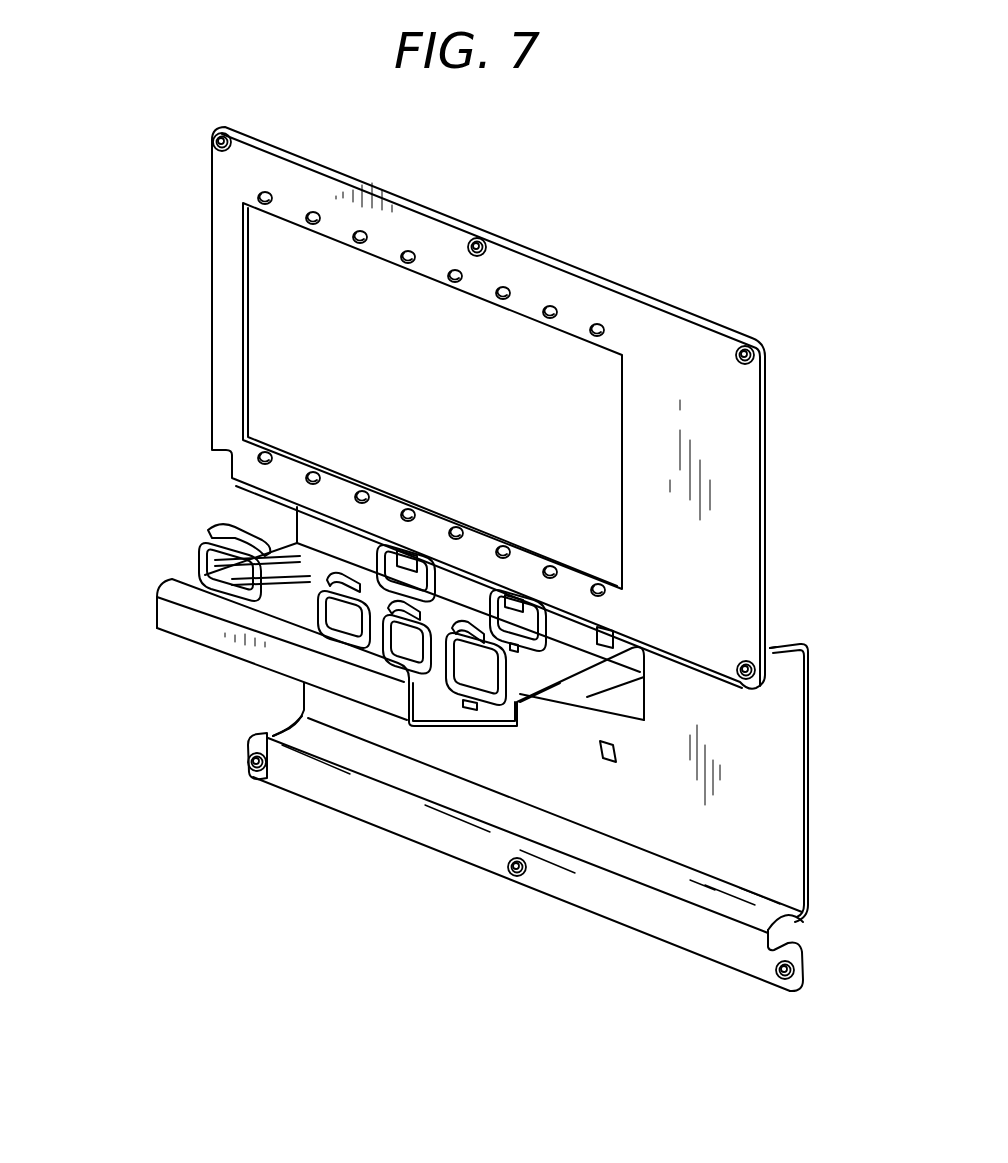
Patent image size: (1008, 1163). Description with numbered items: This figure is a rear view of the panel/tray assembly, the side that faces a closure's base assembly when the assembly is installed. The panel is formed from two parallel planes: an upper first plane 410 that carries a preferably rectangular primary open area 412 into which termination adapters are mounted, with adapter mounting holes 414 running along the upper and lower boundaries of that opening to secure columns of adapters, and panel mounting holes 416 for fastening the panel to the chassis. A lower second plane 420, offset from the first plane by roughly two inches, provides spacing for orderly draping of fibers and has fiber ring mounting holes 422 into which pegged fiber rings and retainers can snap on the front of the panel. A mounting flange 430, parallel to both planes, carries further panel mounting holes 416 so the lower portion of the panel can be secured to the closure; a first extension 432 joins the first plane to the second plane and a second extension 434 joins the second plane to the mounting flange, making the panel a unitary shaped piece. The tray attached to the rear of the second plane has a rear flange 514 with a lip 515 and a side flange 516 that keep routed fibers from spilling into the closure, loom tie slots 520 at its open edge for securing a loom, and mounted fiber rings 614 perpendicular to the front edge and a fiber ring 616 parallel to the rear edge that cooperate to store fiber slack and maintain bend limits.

The first plane 410 is at (730, 440).
The primary open area 412 is at (300, 360).
The adapter mounting holes 414 is at (556, 306).
The panel mounting holes 416 is at (212, 142).
The second plane 420 is at (774, 780).
The fiber ring mounting holes 422 is at (602, 760).
The mounting flange 430 is at (404, 821).
The first extension 432 is at (773, 648).
The second extension 434 is at (803, 928).
The rear flange 514 is at (177, 622).
The lip 515 is at (182, 585).
The side flange 516 is at (541, 705).
The loom tie slots 520 is at (214, 526).
The fiber rings 614 is at (548, 628).
The fiber ring 616 is at (202, 546).